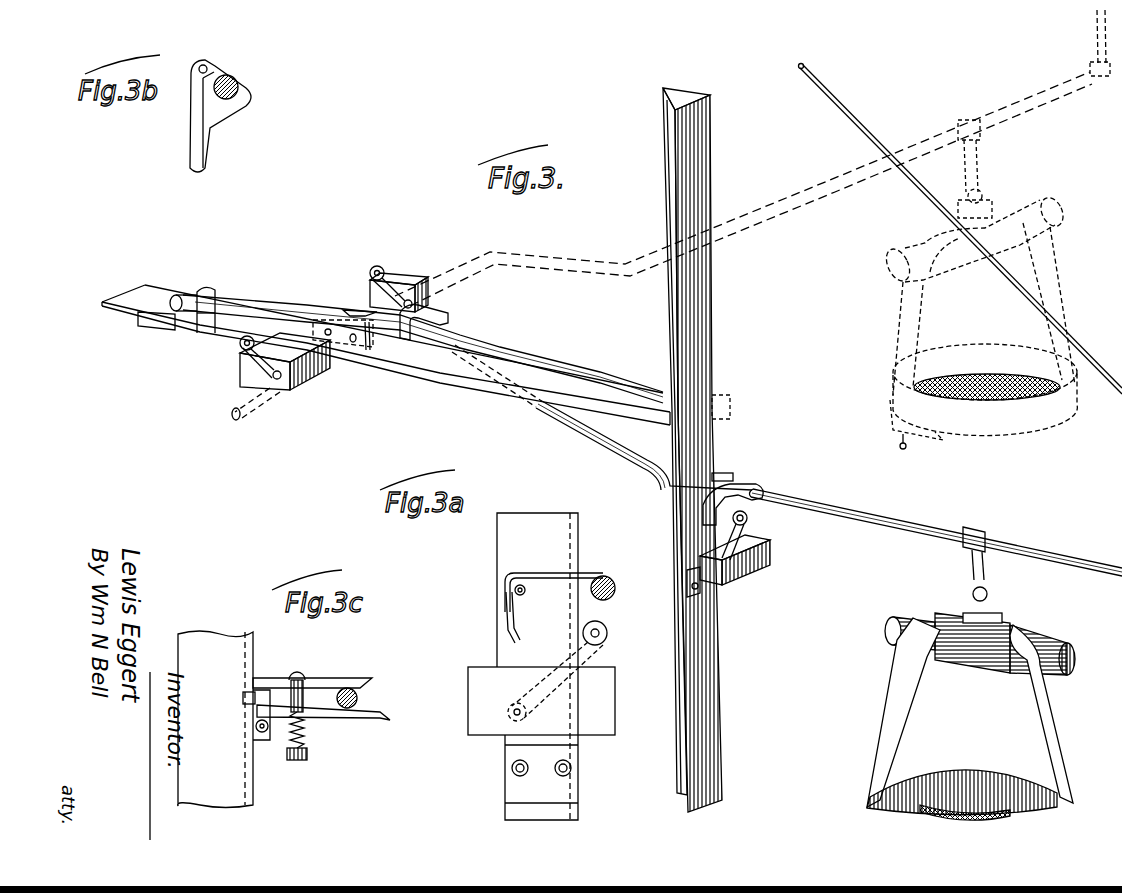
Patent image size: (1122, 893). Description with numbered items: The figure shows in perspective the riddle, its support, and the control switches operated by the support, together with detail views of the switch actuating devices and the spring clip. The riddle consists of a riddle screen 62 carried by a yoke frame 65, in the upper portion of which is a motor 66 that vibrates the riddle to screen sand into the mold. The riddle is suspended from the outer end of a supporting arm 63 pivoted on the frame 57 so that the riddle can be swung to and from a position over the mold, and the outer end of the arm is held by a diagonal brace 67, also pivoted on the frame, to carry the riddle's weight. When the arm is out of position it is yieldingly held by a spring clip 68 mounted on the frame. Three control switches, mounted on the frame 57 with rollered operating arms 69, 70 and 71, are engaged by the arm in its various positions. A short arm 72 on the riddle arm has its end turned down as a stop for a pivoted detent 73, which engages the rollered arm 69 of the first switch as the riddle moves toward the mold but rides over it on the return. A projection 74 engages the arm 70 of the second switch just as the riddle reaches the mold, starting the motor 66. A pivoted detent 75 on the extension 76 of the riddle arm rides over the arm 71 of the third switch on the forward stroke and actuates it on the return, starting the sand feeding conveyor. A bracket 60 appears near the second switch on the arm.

In FIG. 3, the frame 57 is at (714, 312).
In FIG. 3A, the frame 57 is at (505, 757).
In FIG. 3C, the frame 57 is at (235, 650).
In FIG. 3, the bracket 60 is at (352, 312).
In FIG. 3, the riddle screen 62 is at (940, 772).
In FIG. 3, the supporting arm 63 is at (803, 192).
In FIG. 3A, the supporting arm 63 is at (608, 578).
In FIG. 3C, the supporting arm 63 is at (360, 695).
In FIG. 3, the yoke frame 65 is at (1055, 252).
In FIG. 3, the motor 66 is at (1000, 210).
In FIG. 3, the diagonal brace 67 is at (1098, 356).
In FIG. 3C, the spring clip 68 is at (328, 677).
In FIG. 3, the rollered operating arm 69 is at (750, 520).
In FIG. 3A, the rollered operating arm 69 is at (582, 640).
In FIG. 3, the rollered operating arm 70 is at (372, 292).
In FIG. 3, the rollered operating arm 71 is at (238, 395).
In FIG. 3, the short arm 72 is at (745, 485).
In FIG. 3A, the short arm 72 is at (522, 573).
In FIG. 3A, the pivoted detent 73 is at (516, 618).
In FIG. 3, the projection 74 is at (448, 316).
In FIG. 3B, the pivoted detent 75 is at (195, 115).
In FIG. 3, the pivoted detent 75 is at (198, 328).
In FIG. 3B, the extension 76 is at (240, 84).
In FIG. 3, the extension 76 is at (240, 298).